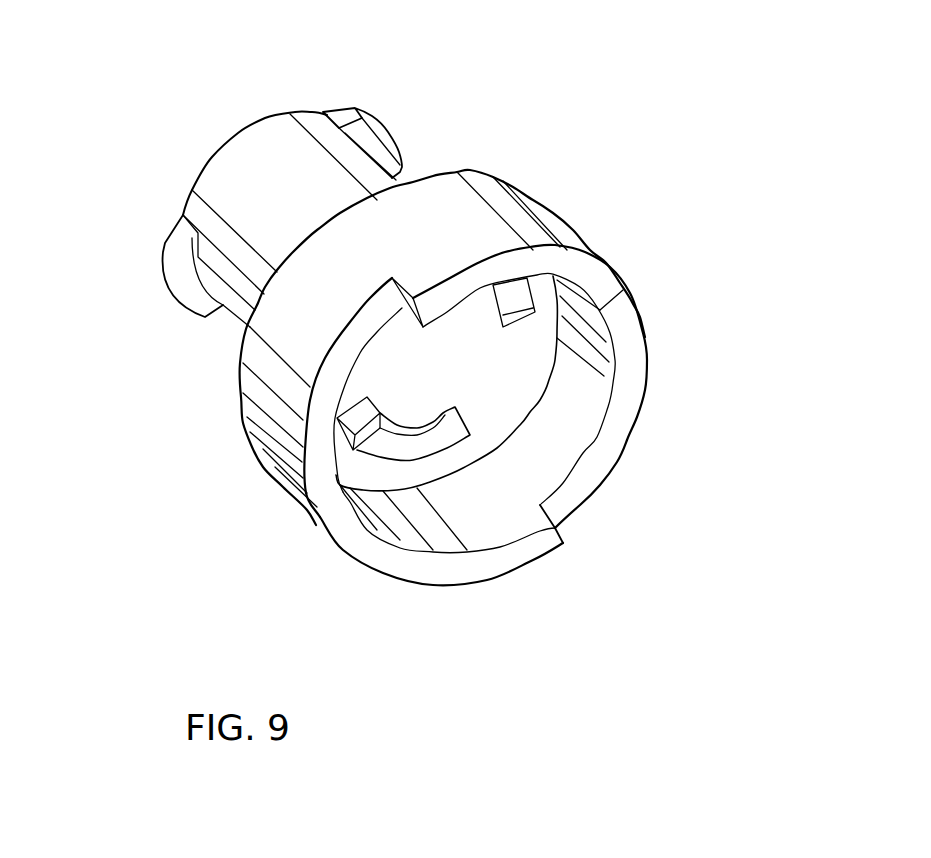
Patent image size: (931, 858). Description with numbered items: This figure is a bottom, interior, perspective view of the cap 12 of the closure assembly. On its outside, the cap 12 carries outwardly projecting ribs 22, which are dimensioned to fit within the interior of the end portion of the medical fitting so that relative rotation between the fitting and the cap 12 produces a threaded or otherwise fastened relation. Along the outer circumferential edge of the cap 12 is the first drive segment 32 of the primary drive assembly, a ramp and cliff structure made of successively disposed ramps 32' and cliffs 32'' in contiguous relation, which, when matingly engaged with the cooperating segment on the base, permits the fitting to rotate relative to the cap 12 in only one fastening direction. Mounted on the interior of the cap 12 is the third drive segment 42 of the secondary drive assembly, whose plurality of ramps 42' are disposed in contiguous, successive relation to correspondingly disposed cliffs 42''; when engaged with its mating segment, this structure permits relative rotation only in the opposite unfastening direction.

The cap 12 is at (472, 168).
The outwardly projecting ribs 22 is at (373, 128).
The first drive segment 32 is at (606, 386).
The ramps 32' is at (441, 604).
The cliffs 32'' is at (653, 548).
The third drive segment 42 is at (525, 413).
The ramps 42' is at (500, 410).
The cliffs 42'' is at (270, 466).